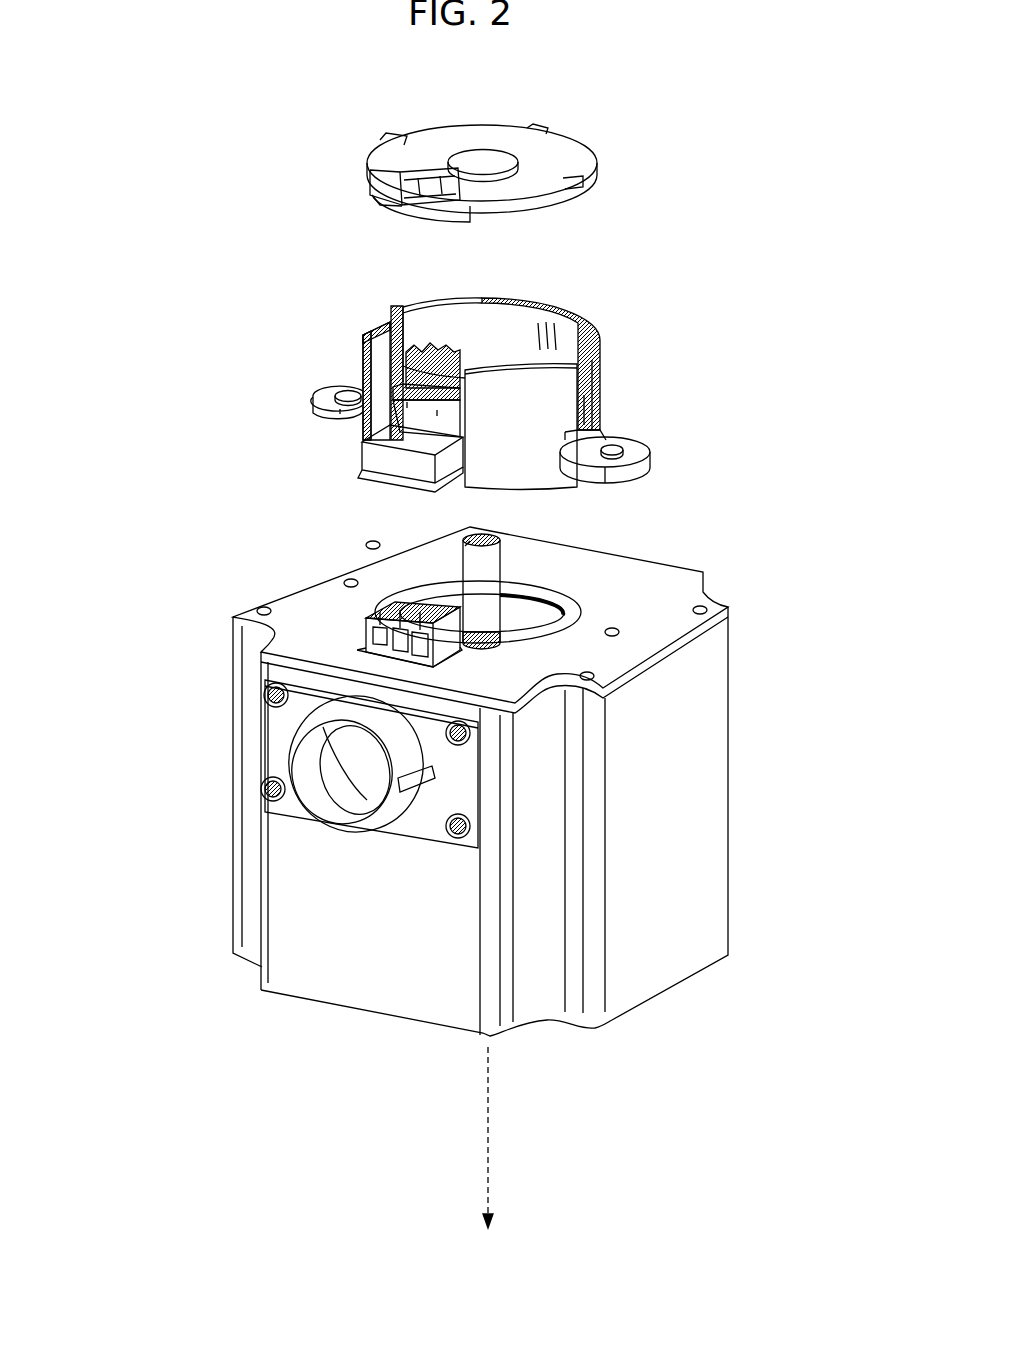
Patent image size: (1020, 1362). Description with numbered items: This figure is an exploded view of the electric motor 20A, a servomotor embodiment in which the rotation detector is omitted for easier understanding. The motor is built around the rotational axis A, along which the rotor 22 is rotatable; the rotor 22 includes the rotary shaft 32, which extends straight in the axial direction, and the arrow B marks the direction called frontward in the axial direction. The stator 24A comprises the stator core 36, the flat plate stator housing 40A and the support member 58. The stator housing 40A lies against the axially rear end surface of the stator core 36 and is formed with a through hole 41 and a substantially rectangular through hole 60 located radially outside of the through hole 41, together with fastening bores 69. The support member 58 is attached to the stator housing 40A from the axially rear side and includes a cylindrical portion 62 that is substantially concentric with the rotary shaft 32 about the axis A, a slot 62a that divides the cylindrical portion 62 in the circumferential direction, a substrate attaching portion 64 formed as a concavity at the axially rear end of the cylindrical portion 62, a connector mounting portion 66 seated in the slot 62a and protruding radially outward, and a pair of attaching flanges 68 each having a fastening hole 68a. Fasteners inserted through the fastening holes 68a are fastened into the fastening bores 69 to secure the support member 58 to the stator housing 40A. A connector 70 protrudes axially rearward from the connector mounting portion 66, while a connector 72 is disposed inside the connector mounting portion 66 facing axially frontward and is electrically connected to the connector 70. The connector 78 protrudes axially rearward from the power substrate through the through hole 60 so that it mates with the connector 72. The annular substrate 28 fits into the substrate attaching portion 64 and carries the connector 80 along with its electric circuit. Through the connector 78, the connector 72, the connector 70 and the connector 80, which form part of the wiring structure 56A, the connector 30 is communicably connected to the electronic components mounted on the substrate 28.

The electric motor 20A is at (838, 93).
The stator 24A is at (190, 298).
The substrate 28 is at (566, 125).
The connector 80 is at (370, 171).
The wiring structure 56A is at (396, 313).
The support member 58 is at (633, 342).
The substrate attaching portion 64 is at (566, 308).
The cylindrical portion 62 is at (530, 447).
The slot 62a is at (460, 364).
The connector mounting portion 66 is at (369, 456).
The attaching flange 68 is at (322, 394).
The fastening hole 68a is at (346, 391).
The connector 70 is at (417, 418).
The connector 72 is at (408, 487).
The rotary shaft 32 is at (497, 552).
The through hole 41 is at (523, 582).
The stator housing 40A is at (670, 570).
The fastening bore 69 is at (350, 583).
The rotor 22 is at (455, 555).
The through hole 60 is at (377, 635).
The connector 78 is at (447, 642).
The stator core 36 is at (715, 773).
The connector 30 is at (337, 838).
The rotational axis A is at (490, 1100).
The arrow B is at (498, 1223).